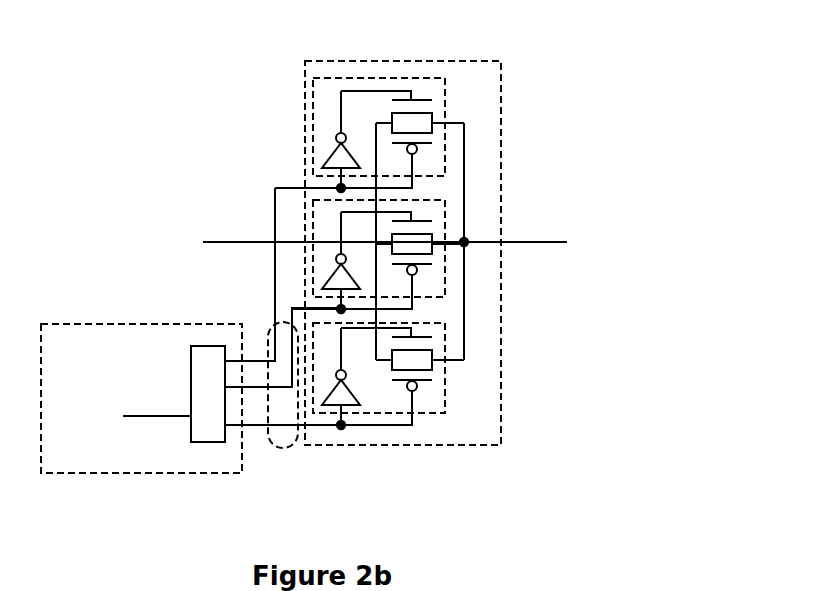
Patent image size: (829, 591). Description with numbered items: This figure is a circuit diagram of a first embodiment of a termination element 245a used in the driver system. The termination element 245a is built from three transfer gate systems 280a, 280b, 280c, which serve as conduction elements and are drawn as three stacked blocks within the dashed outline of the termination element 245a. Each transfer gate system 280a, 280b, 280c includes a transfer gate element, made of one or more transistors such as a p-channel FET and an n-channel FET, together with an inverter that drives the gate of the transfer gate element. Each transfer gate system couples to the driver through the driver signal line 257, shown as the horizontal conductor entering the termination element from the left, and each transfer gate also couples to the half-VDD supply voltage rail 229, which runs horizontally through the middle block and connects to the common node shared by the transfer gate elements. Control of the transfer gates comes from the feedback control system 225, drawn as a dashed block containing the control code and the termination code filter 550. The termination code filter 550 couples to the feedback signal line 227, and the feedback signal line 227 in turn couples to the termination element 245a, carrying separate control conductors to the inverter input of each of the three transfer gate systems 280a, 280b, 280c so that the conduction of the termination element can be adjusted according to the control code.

The termination element 245a is at (459, 61).
The transfer gate system 280c is at (447, 102).
The transfer gate system 280b is at (445, 212).
The transfer gate system 280a is at (447, 400).
The ½ VDD supply voltage rail 229 is at (543, 241).
The driver signal line 257 is at (235, 245).
The feedback signal line 227 is at (285, 447).
The feedback control system 225 is at (78, 473).
The termination code filter 550 is at (213, 442).